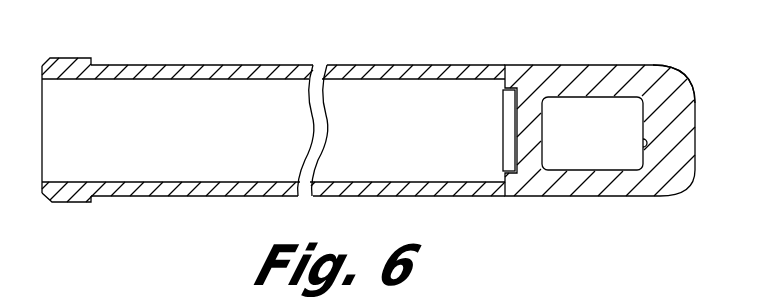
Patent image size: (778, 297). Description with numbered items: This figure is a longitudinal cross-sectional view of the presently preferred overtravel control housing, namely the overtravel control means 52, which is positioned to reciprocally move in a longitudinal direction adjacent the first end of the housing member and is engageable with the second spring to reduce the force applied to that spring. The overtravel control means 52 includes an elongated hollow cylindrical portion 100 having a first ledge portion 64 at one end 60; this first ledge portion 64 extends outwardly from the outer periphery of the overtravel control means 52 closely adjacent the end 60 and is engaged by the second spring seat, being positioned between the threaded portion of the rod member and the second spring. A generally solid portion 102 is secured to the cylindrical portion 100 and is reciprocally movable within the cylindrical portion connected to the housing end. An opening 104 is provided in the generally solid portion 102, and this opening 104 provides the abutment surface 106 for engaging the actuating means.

The elongated hollow cylindrical portion 100 is at (228, 72).
The end 60 is at (71, 63).
The first ledge portion 64 is at (91, 198).
The overtravel control means 52 is at (562, 67).
The generally solid portion 102 is at (676, 100).
The opening 104 is at (607, 140).
The abutment surface 106 is at (645, 140).